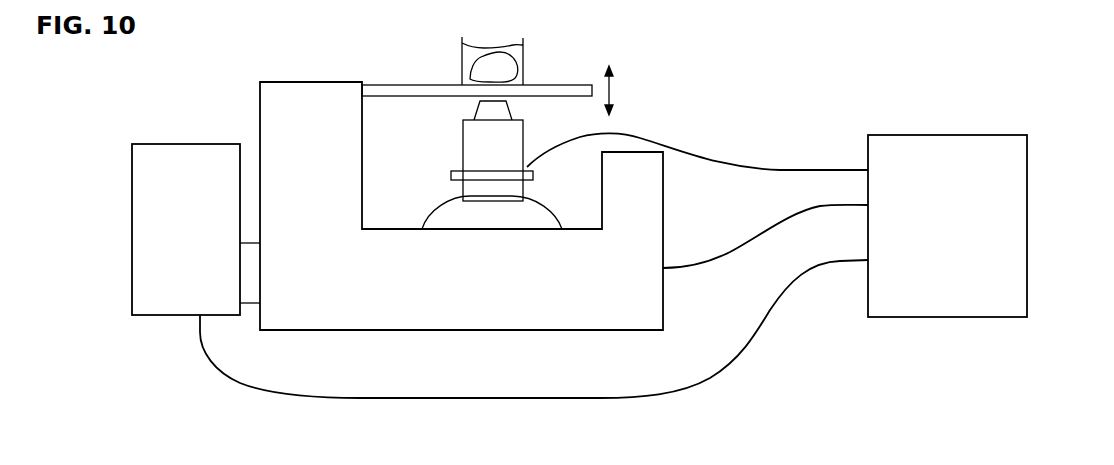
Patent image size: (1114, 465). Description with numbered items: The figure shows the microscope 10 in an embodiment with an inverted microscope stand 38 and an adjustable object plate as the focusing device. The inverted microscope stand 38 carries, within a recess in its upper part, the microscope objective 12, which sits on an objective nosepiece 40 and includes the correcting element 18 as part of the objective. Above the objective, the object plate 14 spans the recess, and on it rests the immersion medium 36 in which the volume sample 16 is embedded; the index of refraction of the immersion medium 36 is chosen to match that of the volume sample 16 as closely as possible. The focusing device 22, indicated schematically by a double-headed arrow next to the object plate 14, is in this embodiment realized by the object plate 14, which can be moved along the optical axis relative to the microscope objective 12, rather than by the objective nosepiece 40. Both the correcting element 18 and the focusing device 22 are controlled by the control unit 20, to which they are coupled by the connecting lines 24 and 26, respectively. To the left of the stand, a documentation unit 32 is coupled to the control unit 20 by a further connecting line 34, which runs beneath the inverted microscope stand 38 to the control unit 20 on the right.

The microscope 10 is at (950, 112).
The microscope objective 12 is at (515, 142).
The object plate 14 is at (552, 85).
The volume sample 16 is at (477, 72).
The correcting element 18 is at (458, 172).
The control unit 20 is at (1027, 198).
The focusing device 22 is at (612, 92).
The connecting line 24 is at (789, 170).
The connecting line 26 is at (797, 212).
The documentation unit 32 is at (180, 147).
The connecting line 34 is at (840, 262).
The immersion medium 36 is at (470, 52).
The inverted microscope stand 38 is at (465, 318).
The objective nosepiece 40 is at (482, 217).